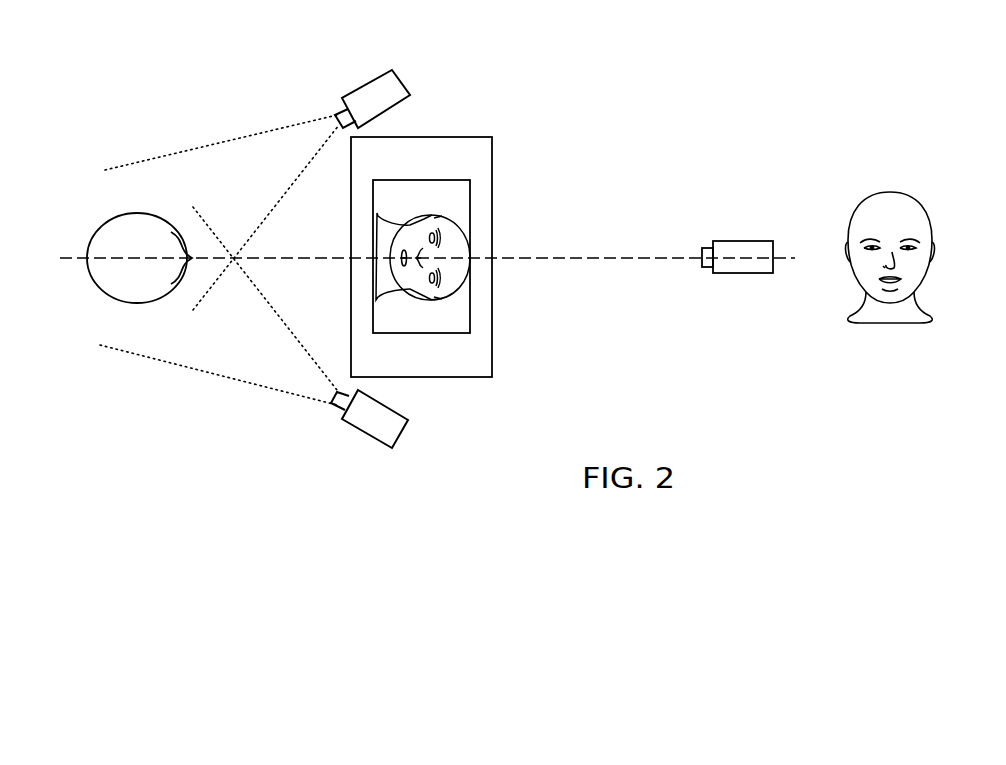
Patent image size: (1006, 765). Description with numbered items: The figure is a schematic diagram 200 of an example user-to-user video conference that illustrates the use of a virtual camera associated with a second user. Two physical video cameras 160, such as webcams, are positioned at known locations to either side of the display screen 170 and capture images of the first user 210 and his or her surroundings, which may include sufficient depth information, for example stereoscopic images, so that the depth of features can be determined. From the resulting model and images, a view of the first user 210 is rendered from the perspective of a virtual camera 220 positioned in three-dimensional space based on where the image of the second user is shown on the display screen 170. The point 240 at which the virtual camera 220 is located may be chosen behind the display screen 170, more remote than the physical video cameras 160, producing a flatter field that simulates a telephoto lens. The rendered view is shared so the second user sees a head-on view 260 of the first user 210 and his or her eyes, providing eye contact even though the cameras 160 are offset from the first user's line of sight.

The schematic diagram 200 is at (168, 63).
The first user 210 is at (137, 213).
The physical video cameras 160 is at (398, 72).
The display screen 170 is at (493, 342).
The virtual camera 220 is at (752, 273).
The point 240 is at (707, 273).
The head-on view 260 is at (890, 192).